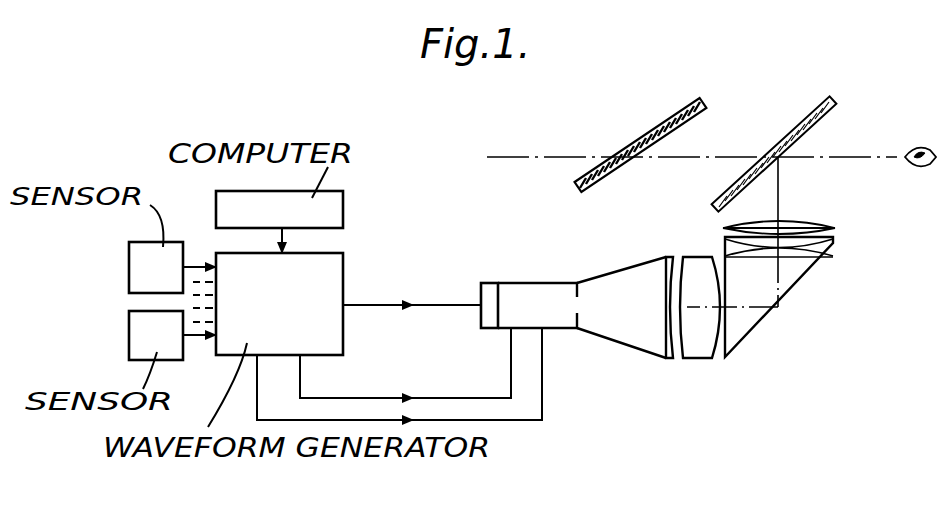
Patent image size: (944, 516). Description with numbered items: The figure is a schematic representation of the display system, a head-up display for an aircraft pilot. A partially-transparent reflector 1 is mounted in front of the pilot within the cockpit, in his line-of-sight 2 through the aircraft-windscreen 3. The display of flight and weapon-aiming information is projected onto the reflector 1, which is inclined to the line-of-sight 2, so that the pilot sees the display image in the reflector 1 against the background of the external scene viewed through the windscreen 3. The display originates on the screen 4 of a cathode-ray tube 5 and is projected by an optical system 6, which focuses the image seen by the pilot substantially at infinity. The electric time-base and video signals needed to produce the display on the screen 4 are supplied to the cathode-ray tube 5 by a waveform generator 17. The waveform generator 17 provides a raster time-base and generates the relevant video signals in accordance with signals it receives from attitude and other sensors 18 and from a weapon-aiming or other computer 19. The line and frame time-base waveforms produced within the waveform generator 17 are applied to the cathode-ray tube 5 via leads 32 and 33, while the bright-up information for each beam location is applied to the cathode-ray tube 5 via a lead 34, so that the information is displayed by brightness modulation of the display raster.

The partially-transparent reflector 1 is at (806, 114).
The line-of-sight 2 is at (845, 157).
The aircraft-windscreen 3 is at (670, 120).
The screen 4 is at (673, 258).
The cathode-ray tube 5 is at (606, 285).
The optical system 6 is at (812, 331).
The waveform generator 17 is at (328, 290).
The sensors 18 is at (142, 256).
The computer 19 is at (333, 215).
The lead 32 is at (302, 392).
The lead 33 is at (257, 380).
The lead 34 is at (463, 306).